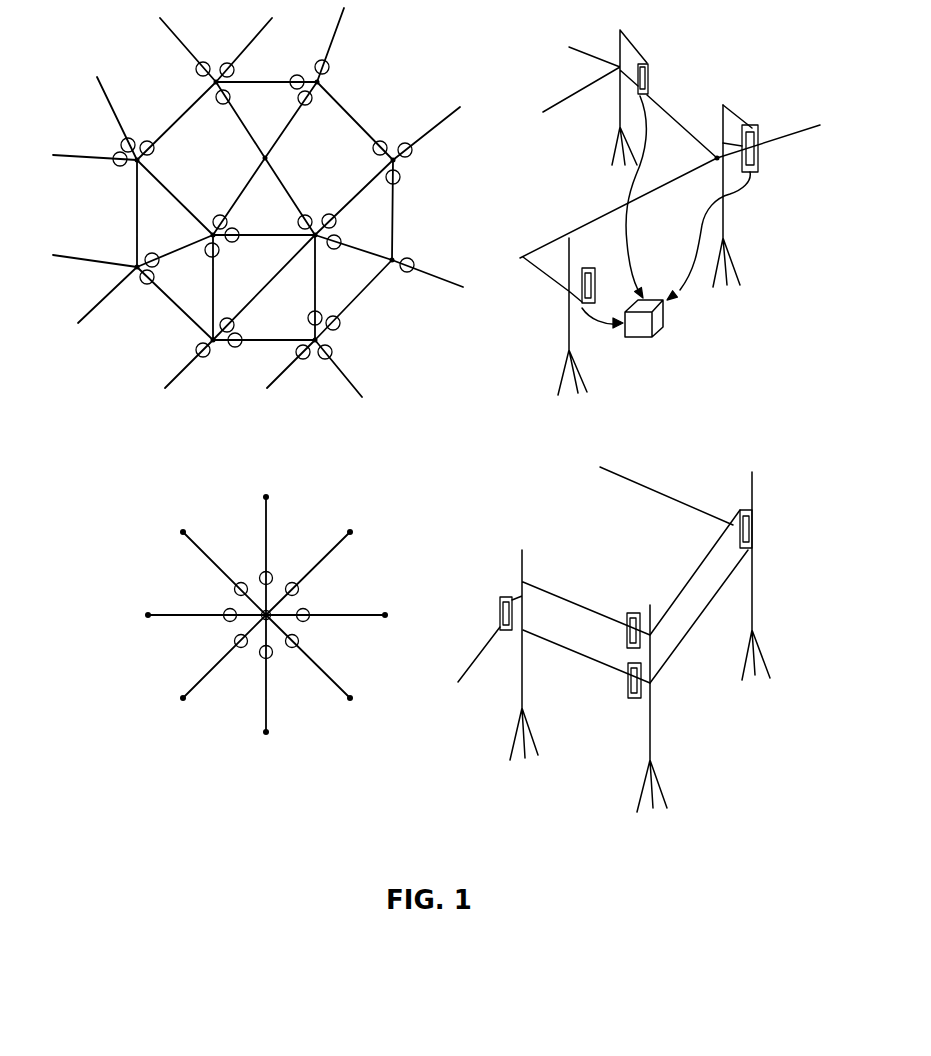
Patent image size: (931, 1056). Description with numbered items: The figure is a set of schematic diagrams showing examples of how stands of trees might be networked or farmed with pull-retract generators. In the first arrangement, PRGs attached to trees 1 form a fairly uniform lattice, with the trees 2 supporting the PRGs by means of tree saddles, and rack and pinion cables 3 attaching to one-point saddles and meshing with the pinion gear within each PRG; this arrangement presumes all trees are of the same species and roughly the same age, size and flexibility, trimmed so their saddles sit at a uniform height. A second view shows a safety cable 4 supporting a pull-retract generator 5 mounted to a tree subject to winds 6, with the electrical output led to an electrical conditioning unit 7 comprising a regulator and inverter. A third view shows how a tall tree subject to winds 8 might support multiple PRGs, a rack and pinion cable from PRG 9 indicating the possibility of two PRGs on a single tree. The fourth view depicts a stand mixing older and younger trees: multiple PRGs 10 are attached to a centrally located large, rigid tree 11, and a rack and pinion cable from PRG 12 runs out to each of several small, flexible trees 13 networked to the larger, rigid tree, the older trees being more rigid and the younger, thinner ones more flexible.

The pull-retract generators attached to trees 1 is at (328, 70).
The trees 2 is at (321, 88).
The rack and pinion cables 3 is at (102, 298).
The safety cable 4 is at (733, 117).
The pull-retract generator 5 is at (760, 127).
The tree subject to winds 6 is at (725, 217).
The electrical conditioning unit 7 is at (662, 315).
The tree subject to winds 8 is at (650, 738).
The rack and pinion cable from PRG 9 is at (595, 663).
The multiple PRGs 10 is at (267, 573).
The large, rigid tree 11 is at (280, 612).
The rack and pinion cable from PRG 12 is at (207, 672).
The small, flexible trees 13 is at (182, 533).